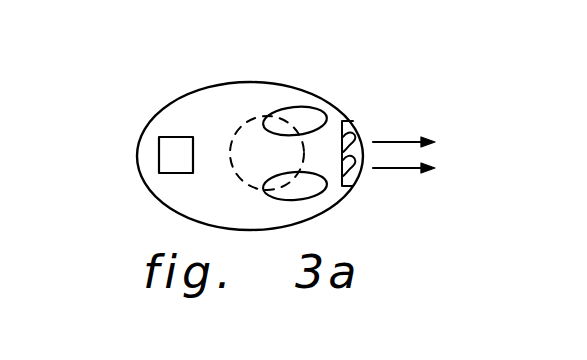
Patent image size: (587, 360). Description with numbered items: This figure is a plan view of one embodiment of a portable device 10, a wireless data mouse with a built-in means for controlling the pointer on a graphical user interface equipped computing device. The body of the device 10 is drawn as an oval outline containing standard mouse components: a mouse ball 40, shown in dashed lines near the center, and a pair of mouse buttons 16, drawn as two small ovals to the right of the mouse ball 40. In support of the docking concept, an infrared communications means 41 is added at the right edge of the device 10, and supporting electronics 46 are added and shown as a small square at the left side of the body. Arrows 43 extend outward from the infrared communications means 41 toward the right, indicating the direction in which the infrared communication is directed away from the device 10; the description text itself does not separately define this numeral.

The portable device 10 is at (157, 118).
The mouse ball 40 is at (247, 127).
The mouse buttons 16 is at (302, 107).
The infrared communications means 41 is at (353, 187).
The output flow arrows 43 is at (393, 141).
The supporting electronics 46 is at (170, 155).